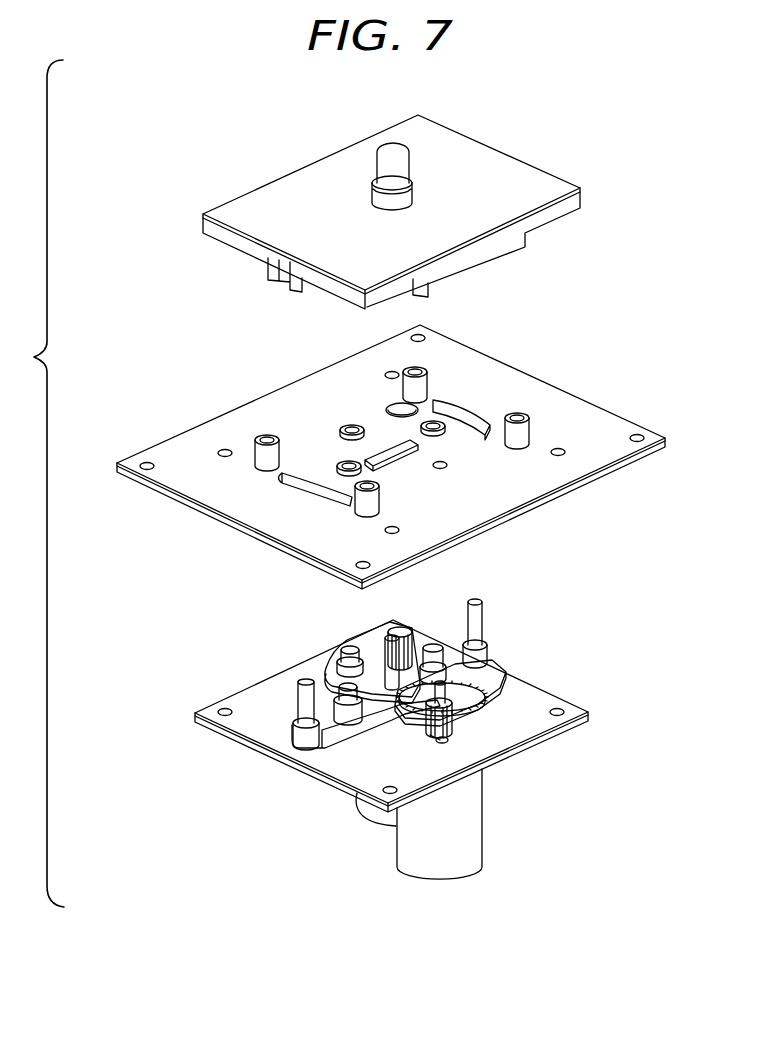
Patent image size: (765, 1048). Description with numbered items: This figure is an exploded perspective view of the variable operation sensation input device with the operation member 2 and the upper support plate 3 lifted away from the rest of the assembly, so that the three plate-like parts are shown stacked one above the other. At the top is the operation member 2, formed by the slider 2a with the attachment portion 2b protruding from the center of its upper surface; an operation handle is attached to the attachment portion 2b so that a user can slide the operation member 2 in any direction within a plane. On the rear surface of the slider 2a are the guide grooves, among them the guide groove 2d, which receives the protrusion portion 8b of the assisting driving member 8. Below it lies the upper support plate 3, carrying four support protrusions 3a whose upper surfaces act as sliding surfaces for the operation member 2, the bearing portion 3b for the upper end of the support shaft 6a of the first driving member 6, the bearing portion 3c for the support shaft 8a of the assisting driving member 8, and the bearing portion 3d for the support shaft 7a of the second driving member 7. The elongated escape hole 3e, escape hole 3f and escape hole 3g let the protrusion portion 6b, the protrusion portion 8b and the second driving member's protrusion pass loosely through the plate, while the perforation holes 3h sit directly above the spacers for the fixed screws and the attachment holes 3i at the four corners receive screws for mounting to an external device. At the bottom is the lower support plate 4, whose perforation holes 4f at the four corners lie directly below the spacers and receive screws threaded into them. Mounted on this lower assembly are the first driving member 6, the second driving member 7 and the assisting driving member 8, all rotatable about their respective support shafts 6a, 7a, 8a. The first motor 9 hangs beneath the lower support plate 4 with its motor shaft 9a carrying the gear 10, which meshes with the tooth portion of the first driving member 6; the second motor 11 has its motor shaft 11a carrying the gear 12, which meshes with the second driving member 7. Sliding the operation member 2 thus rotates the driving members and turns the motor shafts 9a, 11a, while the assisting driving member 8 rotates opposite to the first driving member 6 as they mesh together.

The operation member 2 is at (387, 201).
The slider 2a is at (495, 167).
The attachment portion 2b is at (380, 165).
The guide groove 2d is at (268, 272).
The upper support plate 3 is at (377, 442).
The support protrusions 3a is at (423, 387).
The bearing portion 3b is at (445, 432).
The bearing portion 3c is at (345, 468).
The bearing portion 3d is at (340, 428).
The escape hole 3e is at (478, 418).
The escape hole 3f is at (287, 485).
The escape hole 3g is at (387, 447).
The perforation holes 3h is at (560, 450).
The attachment holes 3i is at (640, 435).
The lower support plate 4 is at (375, 716).
The perforation holes 4f is at (558, 710).
The first driving member 6 is at (497, 683).
The support shaft 6a is at (463, 680).
The protrusion portion 6b is at (478, 625).
The second driving member 7 is at (348, 646).
The support shaft 7a is at (345, 655).
The assisting driving member 8 is at (312, 706).
The support shaft 8a is at (345, 698).
The protrusion portion 8b is at (300, 698).
The first motor 9 is at (413, 798).
The motor shaft 9a is at (415, 718).
The gear 10 is at (455, 722).
The second motor 11 is at (377, 810).
The motor shaft 11a is at (407, 625).
The gear 12 is at (436, 660).